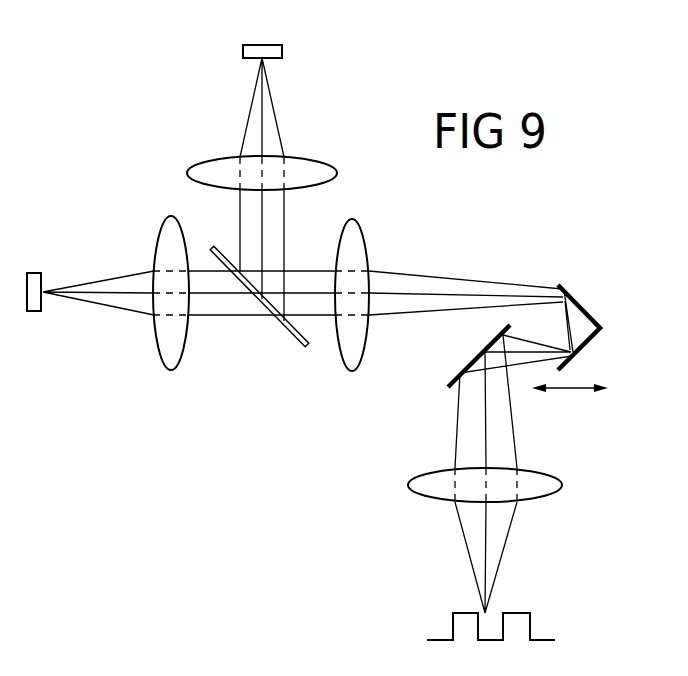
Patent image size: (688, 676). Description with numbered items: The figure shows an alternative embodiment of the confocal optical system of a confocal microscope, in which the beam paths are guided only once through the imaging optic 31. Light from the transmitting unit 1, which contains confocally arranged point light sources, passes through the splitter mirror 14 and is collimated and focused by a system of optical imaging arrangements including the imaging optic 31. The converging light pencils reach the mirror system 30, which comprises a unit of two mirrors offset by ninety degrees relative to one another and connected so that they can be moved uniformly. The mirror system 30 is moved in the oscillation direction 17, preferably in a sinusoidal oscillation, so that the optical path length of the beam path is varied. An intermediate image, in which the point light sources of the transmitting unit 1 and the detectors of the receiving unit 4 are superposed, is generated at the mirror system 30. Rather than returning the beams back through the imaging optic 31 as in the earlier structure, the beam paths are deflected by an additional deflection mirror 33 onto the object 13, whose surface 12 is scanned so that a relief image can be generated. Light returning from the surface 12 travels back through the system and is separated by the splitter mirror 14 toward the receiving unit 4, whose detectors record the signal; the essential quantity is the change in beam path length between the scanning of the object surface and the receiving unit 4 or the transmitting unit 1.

The transmitting unit 1 is at (38, 268).
The receiving unit 4 is at (285, 50).
The surface 12 is at (432, 620).
The object 13 is at (518, 612).
The splitter mirror 14 is at (292, 334).
The oscillation direction 17 is at (570, 392).
The mirror system 30 is at (590, 316).
The imaging optic 31 is at (347, 222).
The deflection mirror 33 is at (465, 367).